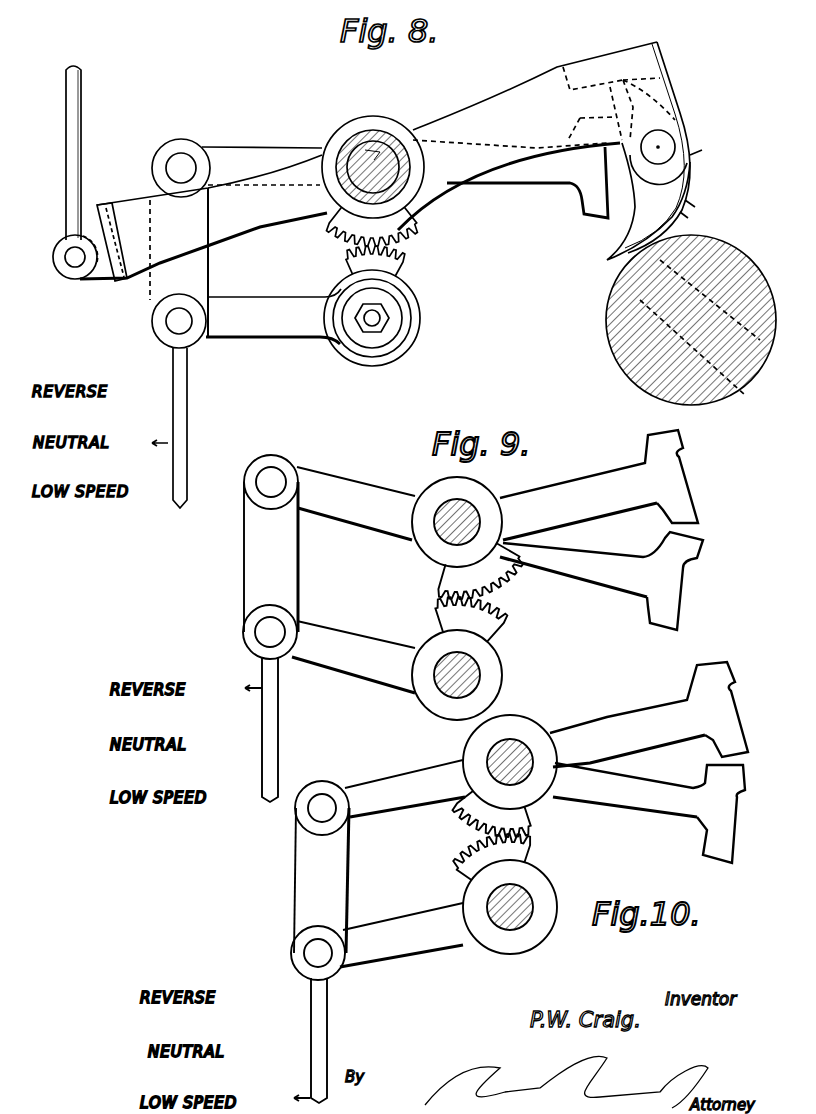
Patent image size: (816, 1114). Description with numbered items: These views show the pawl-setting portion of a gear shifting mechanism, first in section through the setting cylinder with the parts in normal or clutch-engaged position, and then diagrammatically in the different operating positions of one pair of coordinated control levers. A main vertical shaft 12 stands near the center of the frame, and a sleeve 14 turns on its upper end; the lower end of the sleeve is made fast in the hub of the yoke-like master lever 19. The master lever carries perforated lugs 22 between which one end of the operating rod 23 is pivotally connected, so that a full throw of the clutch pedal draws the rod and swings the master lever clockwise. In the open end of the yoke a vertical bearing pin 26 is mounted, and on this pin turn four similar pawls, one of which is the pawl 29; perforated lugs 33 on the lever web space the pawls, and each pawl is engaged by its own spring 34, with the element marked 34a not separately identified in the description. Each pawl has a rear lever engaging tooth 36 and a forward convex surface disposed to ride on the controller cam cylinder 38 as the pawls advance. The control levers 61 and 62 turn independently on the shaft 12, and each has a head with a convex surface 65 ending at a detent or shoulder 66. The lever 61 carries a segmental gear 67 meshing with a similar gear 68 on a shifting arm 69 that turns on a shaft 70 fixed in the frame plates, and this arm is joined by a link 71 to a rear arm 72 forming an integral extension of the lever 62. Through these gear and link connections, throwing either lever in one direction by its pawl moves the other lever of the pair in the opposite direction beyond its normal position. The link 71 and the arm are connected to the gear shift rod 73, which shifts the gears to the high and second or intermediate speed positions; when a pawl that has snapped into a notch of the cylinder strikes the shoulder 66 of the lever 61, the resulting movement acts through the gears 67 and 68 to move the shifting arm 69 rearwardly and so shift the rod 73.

In FIG. 8, the main vertical shaft 12 is at (362, 137).
In FIG. 9, the main vertical shaft 12 is at (468, 510).
In FIG. 10, the main vertical shaft 12 is at (518, 754).
In FIG. 8, the sleeve 14 is at (380, 133).
In FIG. 8, the master lever 19 is at (276, 227).
In FIG. 8, the perforated lugs 22 is at (70, 282).
In FIG. 8, the operating rod 23 is at (83, 110).
In FIG. 8, the vertical bearing pin 26 is at (672, 145).
In FIG. 8, the pawl 29 is at (697, 187).
In FIG. 8, the perforated lugs 33 is at (672, 102).
In FIG. 8, the spring 34 is at (697, 155).
In FIG. 8, the rack extension 34a is at (665, 80).
In FIG. 8, the lever engaging tooth 36 is at (668, 76).
In FIG. 8, the controller cam cylinder 38 is at (717, 263).
In FIG. 8, the control lever 61 is at (505, 182).
In FIG. 9, the control lever 61 is at (553, 492).
In FIG. 10, the control lever 61 is at (607, 722).
In FIG. 9, the control lever 62 is at (578, 582).
In FIG. 10, the control lever 62 is at (650, 813).
In FIG. 9, the convex surface 65 is at (687, 487).
In FIG. 10, the convex surface 65 is at (737, 720).
In FIG. 9, the detent or shoulder 66 is at (687, 452).
In FIG. 10, the detent or shoulder 66 is at (727, 683).
In FIG. 8, the segmental gear 67 is at (398, 225).
In FIG. 9, the segmental gear 67 is at (442, 582).
In FIG. 10, the segmental gear 67 is at (462, 815).
In FIG. 8, the gear 68 is at (390, 270).
In FIG. 9, the gear 68 is at (443, 622).
In FIG. 10, the gear 68 is at (465, 867).
In FIG. 8, the shifting arm 69 is at (263, 338).
In FIG. 9, the shifting arm 69 is at (353, 657).
In FIG. 10, the shifting arm 69 is at (383, 957).
In FIG. 8, the shaft 70 is at (380, 322).
In FIG. 9, the shaft 70 is at (478, 677).
In FIG. 10, the shaft 70 is at (520, 902).
In FIG. 8, the link 71 is at (157, 280).
In FIG. 9, the link 71 is at (290, 575).
In FIG. 10, the link 71 is at (350, 863).
In FIG. 8, the rear arm 72 is at (220, 152).
In FIG. 9, the rear arm 72 is at (330, 485).
In FIG. 10, the rear arm 72 is at (373, 781).
In FIG. 8, the gear shift rod 73 is at (184, 388).
In FIG. 9, the gear shift rod 73 is at (270, 729).
In FIG. 10, the gear shift rod 73 is at (319, 1040).